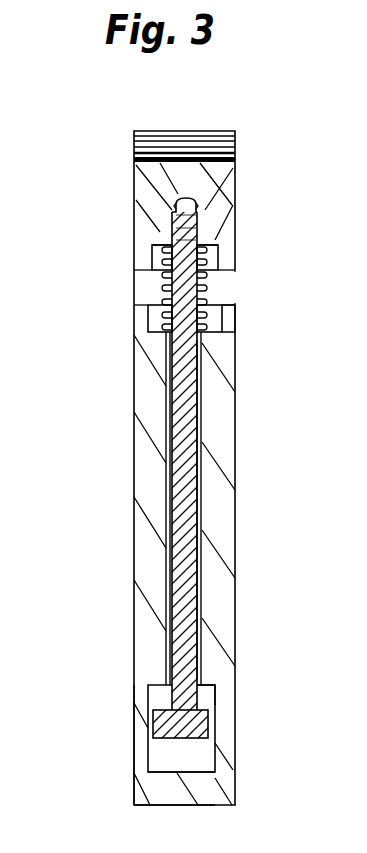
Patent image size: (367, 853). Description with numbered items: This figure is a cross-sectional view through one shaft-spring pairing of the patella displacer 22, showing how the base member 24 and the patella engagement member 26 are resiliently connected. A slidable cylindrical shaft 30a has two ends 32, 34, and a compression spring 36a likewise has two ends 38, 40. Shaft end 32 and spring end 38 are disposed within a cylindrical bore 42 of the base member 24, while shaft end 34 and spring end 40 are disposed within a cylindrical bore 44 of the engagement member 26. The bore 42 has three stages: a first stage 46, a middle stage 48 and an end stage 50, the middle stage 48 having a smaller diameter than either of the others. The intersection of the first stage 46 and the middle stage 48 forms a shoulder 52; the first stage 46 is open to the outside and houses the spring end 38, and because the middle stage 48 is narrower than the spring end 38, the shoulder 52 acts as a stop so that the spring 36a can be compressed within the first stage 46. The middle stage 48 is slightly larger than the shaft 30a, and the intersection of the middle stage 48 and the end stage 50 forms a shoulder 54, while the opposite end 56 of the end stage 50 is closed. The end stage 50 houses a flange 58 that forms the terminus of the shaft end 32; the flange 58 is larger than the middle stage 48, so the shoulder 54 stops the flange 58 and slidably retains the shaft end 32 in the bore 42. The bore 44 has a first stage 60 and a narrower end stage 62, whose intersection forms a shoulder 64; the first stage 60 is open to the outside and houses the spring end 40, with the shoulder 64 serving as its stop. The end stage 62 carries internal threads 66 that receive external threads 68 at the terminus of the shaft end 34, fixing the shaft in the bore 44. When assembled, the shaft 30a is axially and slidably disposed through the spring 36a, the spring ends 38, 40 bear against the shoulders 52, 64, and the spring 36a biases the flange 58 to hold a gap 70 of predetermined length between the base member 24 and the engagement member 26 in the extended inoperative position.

The patella displacer 22 is at (134, 397).
The base member 24 is at (140, 700).
The patella engagement member 26 is at (154, 161).
The slidable cylindrical shaft 30a is at (161, 410).
The shaft end 32 is at (178, 450).
The shaft end 34 is at (134, 157).
The compression spring 36a is at (168, 278).
The spring end 38 is at (235, 330).
The spring end 40 is at (152, 246).
The cylindrical bore 42 is at (203, 420).
The cylindrical bore 44 is at (152, 262).
The first stage 46 is at (235, 317).
The middle stage 48 is at (203, 505).
The end stage 50 is at (215, 705).
The shoulder 52 is at (148, 315).
The shoulder 54 is at (218, 693).
The closed end 56 is at (170, 772).
The flange 58 is at (172, 726).
The first stage 60 is at (212, 262).
The end stage 62 is at (200, 238).
The shoulder 64 is at (134, 190).
The internal threads 66 is at (197, 223).
The external threads 68 is at (190, 198).
The gap 70 is at (240, 288).